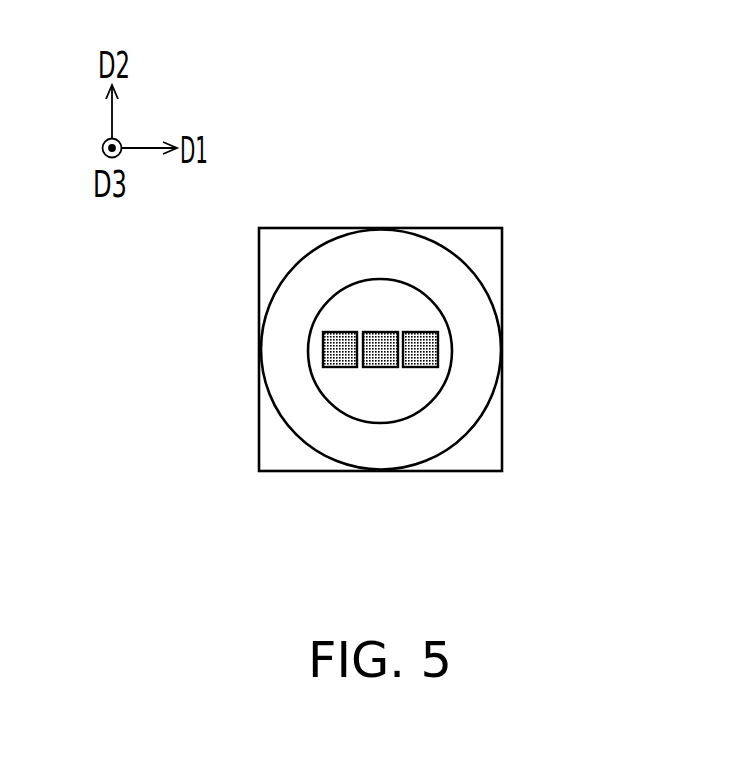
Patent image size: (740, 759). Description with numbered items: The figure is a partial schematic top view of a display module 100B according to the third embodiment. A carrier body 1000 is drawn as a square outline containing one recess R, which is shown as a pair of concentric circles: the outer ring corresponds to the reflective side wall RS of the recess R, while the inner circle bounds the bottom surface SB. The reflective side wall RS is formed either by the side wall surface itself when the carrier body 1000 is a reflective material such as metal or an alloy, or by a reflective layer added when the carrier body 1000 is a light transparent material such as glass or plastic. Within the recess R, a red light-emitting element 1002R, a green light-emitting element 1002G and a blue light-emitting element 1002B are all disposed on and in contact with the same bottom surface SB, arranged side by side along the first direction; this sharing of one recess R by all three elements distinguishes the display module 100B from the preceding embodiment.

The display module 100B is at (620, 592).
The carrier body 1000 is at (288, 240).
The recess R is at (498, 138).
The reflective side wall RS is at (400, 261).
The bottom surface SB is at (420, 317).
The red light-emitting element 1002R is at (340, 357).
The green light-emitting element 1002G is at (380, 357).
The blue light-emitting element 1002B is at (425, 357).